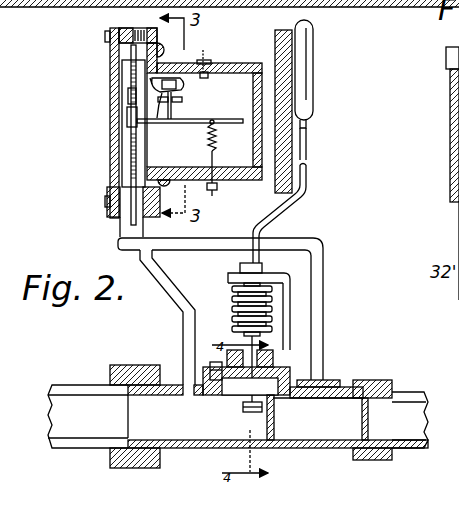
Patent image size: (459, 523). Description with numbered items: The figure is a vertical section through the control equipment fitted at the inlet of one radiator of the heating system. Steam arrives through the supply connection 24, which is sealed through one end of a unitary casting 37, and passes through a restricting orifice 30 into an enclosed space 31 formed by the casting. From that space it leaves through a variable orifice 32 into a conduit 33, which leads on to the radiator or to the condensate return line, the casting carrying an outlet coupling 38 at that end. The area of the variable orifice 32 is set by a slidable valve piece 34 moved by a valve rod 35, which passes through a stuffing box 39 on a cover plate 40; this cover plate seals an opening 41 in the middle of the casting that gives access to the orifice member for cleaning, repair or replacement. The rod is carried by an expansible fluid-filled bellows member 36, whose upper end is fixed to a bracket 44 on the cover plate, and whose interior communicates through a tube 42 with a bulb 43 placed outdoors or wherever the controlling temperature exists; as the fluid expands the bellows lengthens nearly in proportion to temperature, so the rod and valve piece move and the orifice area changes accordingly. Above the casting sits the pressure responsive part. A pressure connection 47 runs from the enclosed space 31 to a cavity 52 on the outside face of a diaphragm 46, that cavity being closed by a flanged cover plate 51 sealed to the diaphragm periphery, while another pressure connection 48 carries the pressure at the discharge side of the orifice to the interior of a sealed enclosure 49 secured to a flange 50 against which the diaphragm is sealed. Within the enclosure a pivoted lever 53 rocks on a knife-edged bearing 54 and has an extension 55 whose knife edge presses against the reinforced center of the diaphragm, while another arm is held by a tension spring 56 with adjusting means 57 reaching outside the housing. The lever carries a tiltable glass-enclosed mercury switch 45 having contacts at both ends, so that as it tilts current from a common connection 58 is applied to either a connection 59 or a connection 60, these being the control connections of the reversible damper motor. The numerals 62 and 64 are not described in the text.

The supply connection 24 is at (413, 394).
The restricting orifice 30 is at (366, 391).
The enclosed space 31 is at (328, 406).
The variable orifice 32 is at (276, 428).
The conduit 33 is at (145, 405).
The slidable valve piece 34 is at (243, 424).
The valve rod 35 is at (246, 394).
The expansible bellows member 36 is at (232, 298).
The unitary casting 37 is at (201, 446).
The outlet coupling 38 is at (111, 373).
The stuffing box 39 is at (266, 356).
The cover plate 40 is at (276, 364).
The opening 41 is at (214, 361).
The tube 42 is at (304, 200).
The bulb 43 is at (311, 95).
The bracket 44 is at (281, 276).
The mercury switch 45 is at (187, 96).
The diaphragm 46 is at (130, 173).
The pressure connection 47 is at (325, 289).
The pressure connection 48 is at (174, 292).
The enclosure 49 is at (239, 69).
The flange 50 is at (160, 48).
The flanged cover plate 51 is at (116, 97).
The cavity 52 is at (123, 145).
The pivoted lever 53 is at (206, 133).
The knife-edged bearing 54 is at (158, 119).
The extension 55 is at (139, 130).
The tension spring 56 is at (216, 139).
The adjusting means 57 is at (218, 188).
The common connection 58 is at (203, 60).
The connection 59 is at (186, 88).
The connection 60 is at (150, 79).
The wall 62 is at (450, 148).
The bracket 64 is at (447, 59).